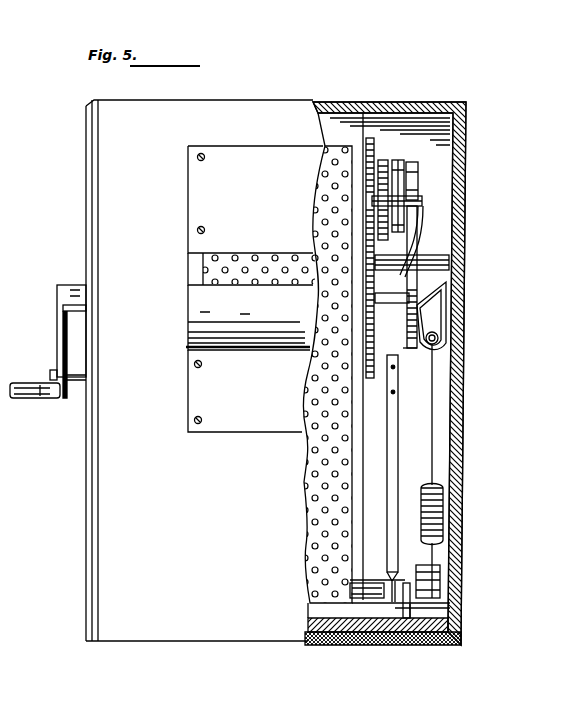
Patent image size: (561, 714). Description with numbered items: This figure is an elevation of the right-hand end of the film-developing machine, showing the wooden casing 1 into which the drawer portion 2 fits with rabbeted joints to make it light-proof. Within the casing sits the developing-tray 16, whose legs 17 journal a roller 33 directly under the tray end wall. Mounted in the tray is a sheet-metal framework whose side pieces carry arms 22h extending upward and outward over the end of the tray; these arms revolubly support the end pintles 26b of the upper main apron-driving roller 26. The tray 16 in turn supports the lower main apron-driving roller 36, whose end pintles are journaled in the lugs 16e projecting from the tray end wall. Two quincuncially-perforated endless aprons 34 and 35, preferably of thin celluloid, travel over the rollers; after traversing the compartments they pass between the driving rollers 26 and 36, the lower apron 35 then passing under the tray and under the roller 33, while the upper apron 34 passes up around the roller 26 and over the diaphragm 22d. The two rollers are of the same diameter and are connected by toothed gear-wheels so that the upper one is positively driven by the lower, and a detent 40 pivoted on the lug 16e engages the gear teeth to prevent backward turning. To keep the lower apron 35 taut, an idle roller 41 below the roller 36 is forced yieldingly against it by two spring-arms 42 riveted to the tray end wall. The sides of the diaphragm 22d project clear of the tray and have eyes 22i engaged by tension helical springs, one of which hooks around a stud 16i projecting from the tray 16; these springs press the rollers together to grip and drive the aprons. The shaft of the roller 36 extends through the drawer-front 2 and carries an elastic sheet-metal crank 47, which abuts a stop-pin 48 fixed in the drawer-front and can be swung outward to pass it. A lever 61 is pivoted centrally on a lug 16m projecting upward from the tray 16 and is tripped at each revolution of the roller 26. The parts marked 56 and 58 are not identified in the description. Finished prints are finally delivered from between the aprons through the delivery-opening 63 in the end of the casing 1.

The wooden casing 1 is at (412, 104).
The drawer portion 2 is at (86, 182).
The tray 16 is at (418, 406).
The lugs 16e is at (410, 354).
The stud 16i is at (432, 582).
The lug 16m is at (430, 258).
The legs 17 is at (442, 603).
The sheet-metal diaphragm 22d is at (440, 296).
The arms 22h is at (423, 228).
The eyes 22i is at (436, 338).
The main apron-driving roller 26 is at (364, 150).
The end pintles 26b is at (423, 203).
The roller 33 is at (406, 622).
The upper endless apron 34 is at (336, 150).
The lower endless apron 35 is at (306, 528).
The main apron-driving roller 36 is at (355, 355).
The detent 40 is at (365, 378).
The idle roller 41 is at (375, 606).
The spring-arms 42 is at (395, 467).
The crank 47 is at (60, 340).
The stop-pin 48 is at (78, 403).
The block 56 is at (406, 168).
The element 58 is at (419, 170).
The lever 61 is at (384, 160).
The delivery-opening 63 is at (190, 270).